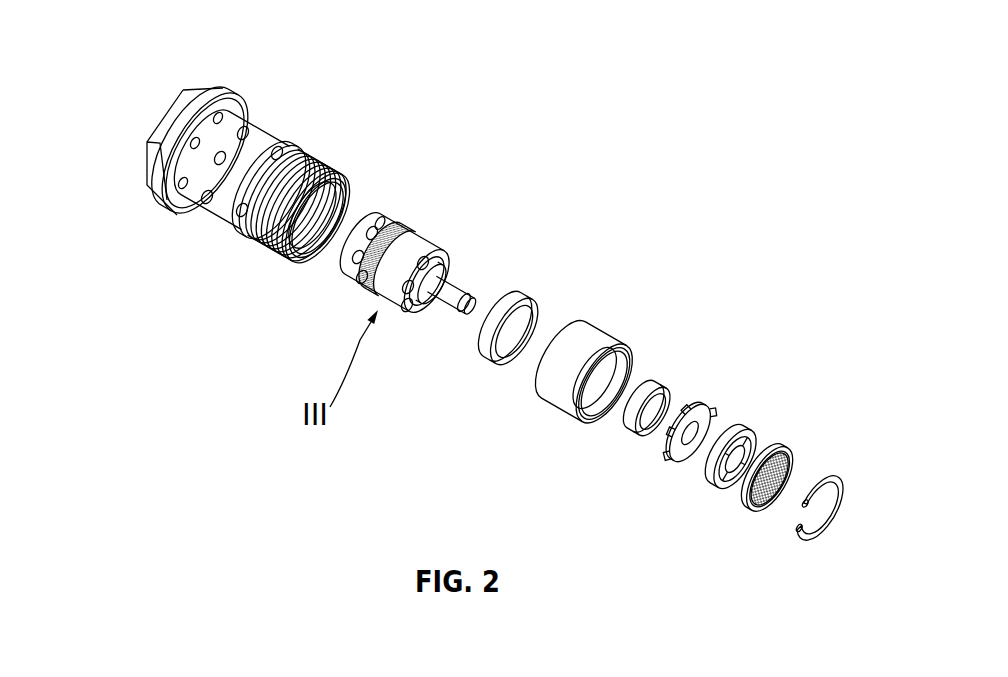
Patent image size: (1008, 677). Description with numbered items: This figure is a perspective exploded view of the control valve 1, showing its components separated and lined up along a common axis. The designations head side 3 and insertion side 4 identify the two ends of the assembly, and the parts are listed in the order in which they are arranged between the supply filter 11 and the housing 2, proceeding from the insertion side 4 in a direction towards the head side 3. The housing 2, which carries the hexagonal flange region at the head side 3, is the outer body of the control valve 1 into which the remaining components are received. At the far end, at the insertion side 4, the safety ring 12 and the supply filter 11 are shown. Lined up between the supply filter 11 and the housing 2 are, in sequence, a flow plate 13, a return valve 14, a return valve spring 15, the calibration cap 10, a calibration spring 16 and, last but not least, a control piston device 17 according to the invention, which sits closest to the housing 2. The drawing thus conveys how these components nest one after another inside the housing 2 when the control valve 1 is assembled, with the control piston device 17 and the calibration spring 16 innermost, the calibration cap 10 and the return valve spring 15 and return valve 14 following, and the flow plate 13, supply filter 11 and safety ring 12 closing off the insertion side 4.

The control valve 1 is at (130, 92).
The housing 2 is at (250, 150).
The head side 3 is at (116, 142).
The insertion side 4 is at (856, 532).
The calibration cap 10 is at (590, 350).
The supply filter 11 is at (800, 450).
The safety ring 12 is at (840, 482).
The flow plate 13 is at (752, 440).
The return valve 14 is at (712, 410).
The return valve spring 15 is at (673, 390).
The calibration spring 16 is at (545, 312).
The control piston device 17 is at (430, 247).